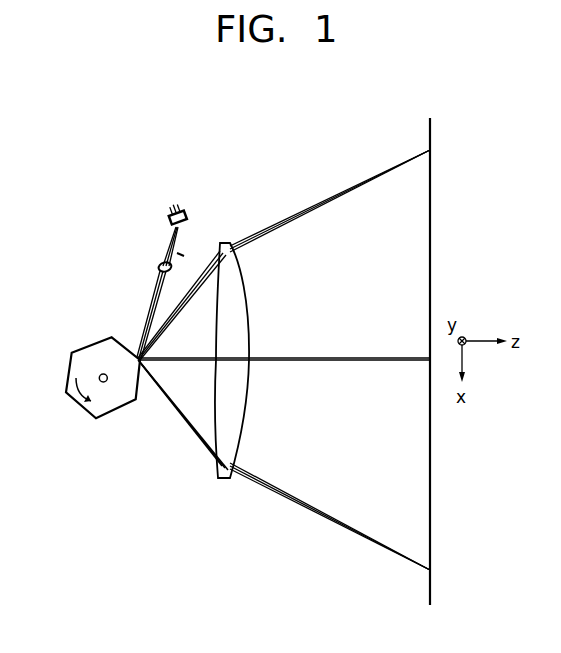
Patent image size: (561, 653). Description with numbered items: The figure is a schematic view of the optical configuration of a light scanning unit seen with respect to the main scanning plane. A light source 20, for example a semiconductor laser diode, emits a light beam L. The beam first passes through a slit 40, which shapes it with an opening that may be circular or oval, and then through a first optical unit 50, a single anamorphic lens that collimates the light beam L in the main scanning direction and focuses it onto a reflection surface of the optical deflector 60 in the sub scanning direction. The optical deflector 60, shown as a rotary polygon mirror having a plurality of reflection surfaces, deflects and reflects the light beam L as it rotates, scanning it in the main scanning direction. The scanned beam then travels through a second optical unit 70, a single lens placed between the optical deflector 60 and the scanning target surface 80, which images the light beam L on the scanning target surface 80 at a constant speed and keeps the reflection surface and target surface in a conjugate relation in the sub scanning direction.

The light source 20 is at (172, 217).
The slit 40 is at (160, 247).
The first optical unit 50 is at (158, 266).
The light beam L is at (150, 308).
The optical deflector 60 is at (88, 352).
The second optical unit 70 is at (247, 300).
The scanning target surface 80 is at (430, 133).